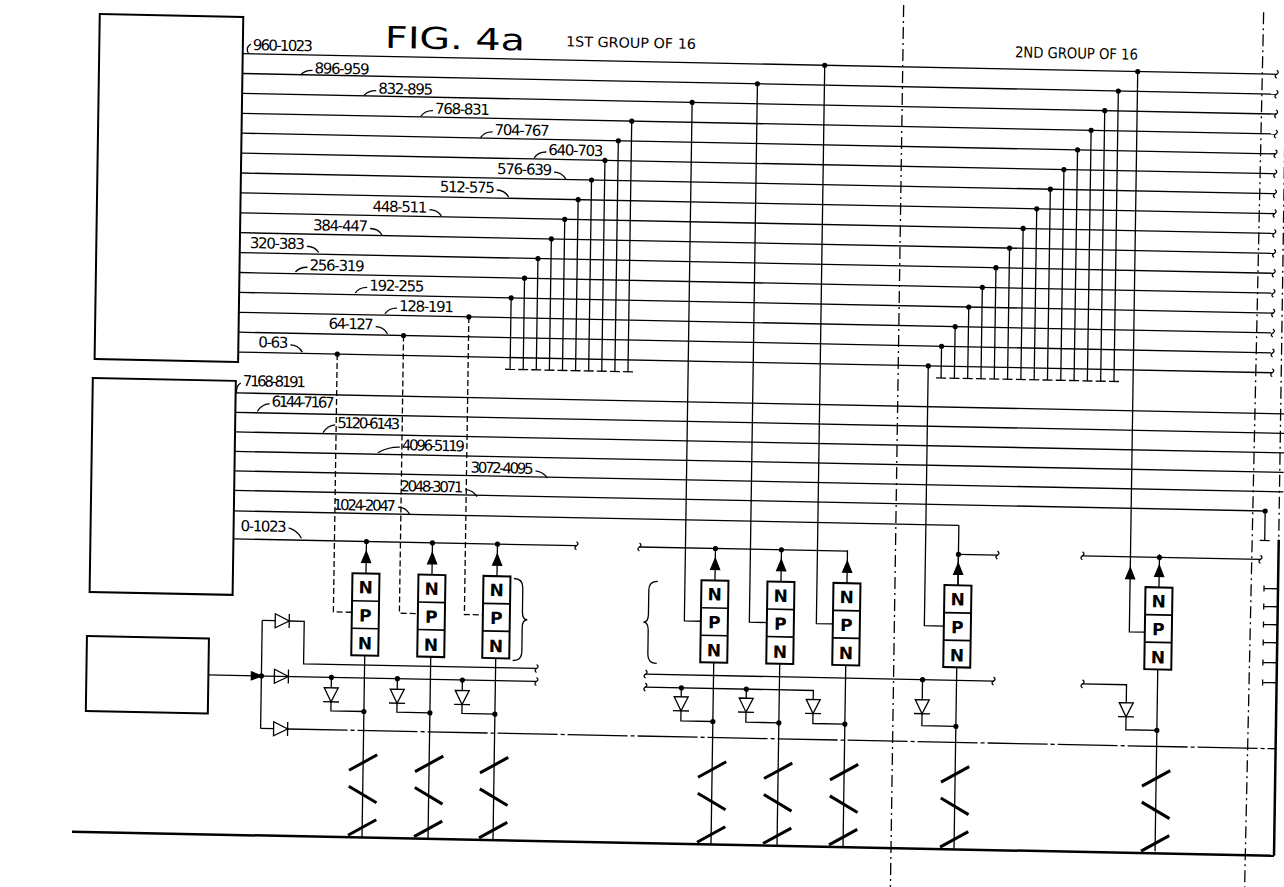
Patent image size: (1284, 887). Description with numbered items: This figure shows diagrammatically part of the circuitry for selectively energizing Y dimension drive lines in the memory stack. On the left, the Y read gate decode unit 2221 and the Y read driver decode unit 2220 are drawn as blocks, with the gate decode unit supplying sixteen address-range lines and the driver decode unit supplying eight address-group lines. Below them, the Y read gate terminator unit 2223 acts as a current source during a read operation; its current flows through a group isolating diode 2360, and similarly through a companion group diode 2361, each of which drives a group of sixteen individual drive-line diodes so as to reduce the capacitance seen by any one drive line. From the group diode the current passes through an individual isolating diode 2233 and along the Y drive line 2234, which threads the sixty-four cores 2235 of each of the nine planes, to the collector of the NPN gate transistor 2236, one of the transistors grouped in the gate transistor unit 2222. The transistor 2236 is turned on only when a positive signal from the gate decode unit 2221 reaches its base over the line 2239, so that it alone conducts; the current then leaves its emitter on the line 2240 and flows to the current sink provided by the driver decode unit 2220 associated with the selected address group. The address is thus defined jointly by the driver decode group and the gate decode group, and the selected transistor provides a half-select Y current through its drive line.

The Y read gate decode unit 2221 is at (238, 27).
The Y read driver decode unit 2220 is at (236, 604).
The Y read gate terminator unit 2223 is at (212, 649).
The isolating diode 2360 is at (280, 623).
The isolating diode 2361 is at (281, 740).
The Y write gate transistor unit 2222 is at (608, 646).
The Y read gate transistor 2236 is at (974, 616).
The isolating diode 2233 is at (934, 699).
The Y drive line 2234 is at (960, 772).
The core 2235 is at (960, 796).
The base signal line 2239 is at (682, 364).
The sink line 2240 is at (638, 519).